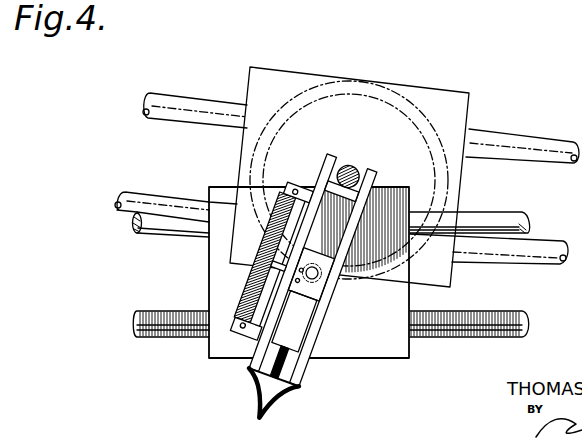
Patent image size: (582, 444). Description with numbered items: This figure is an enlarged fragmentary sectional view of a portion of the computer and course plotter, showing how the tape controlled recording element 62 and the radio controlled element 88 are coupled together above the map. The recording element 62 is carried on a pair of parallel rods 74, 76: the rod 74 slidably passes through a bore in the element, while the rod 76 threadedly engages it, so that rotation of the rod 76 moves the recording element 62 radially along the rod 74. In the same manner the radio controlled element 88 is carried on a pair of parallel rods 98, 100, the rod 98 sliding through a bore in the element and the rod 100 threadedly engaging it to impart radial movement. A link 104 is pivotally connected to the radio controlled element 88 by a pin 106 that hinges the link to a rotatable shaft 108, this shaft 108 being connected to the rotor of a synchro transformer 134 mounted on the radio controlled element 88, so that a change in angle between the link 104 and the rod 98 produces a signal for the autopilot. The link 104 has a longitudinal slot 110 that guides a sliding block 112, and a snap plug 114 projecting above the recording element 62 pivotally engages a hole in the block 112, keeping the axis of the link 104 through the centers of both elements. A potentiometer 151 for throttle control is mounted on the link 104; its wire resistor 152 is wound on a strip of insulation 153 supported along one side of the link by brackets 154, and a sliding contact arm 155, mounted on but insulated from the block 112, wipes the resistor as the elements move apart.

The recording element 62 is at (406, 350).
The rod 74 is at (497, 212).
The rod 76 is at (488, 311).
The radio controlled element 88 is at (471, 107).
The rod 98 is at (193, 95).
The rod 100 is at (136, 192).
The link 104 is at (292, 377).
The pin 106 is at (343, 167).
The rotatable shaft 108 is at (355, 172).
The longitudinal slot 110 is at (297, 333).
The sliding block 112 is at (308, 305).
The snap plug 114 is at (325, 284).
The synchro transformer 134 is at (407, 107).
The potentiometer 151 is at (265, 257).
The wire resistor 152 is at (243, 319).
The strip of insulation 153 is at (292, 188).
The brackets 154 is at (313, 186).
The sliding contact arm 155 is at (265, 270).